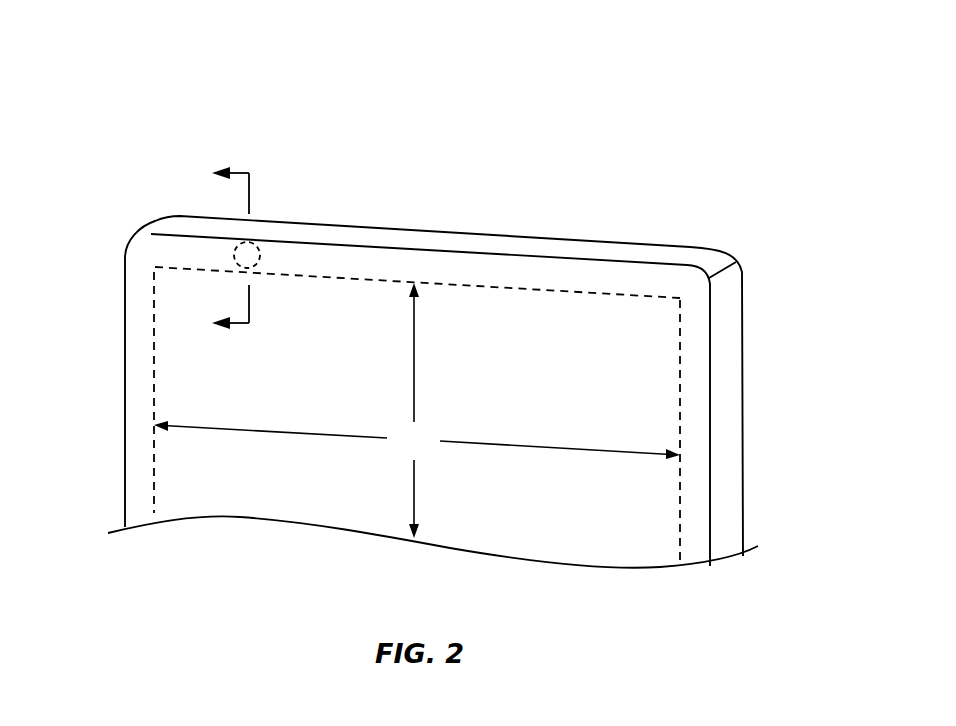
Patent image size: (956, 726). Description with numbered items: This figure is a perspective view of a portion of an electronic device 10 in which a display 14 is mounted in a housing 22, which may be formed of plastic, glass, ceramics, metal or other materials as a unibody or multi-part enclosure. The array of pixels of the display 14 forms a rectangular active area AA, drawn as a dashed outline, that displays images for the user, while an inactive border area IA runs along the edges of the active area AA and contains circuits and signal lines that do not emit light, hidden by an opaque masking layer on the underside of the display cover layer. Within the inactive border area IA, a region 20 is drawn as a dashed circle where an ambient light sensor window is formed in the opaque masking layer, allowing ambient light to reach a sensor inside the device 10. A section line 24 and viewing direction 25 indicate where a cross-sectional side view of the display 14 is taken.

The electronic device 10 is at (622, 83).
The display 14 is at (642, 388).
The region 20 is at (262, 255).
The housing 22 is at (710, 247).
The line 24 is at (250, 185).
The direction 25 is at (233, 172).
The inactive border area IA is at (567, 267).
The active area AA is at (417, 410).